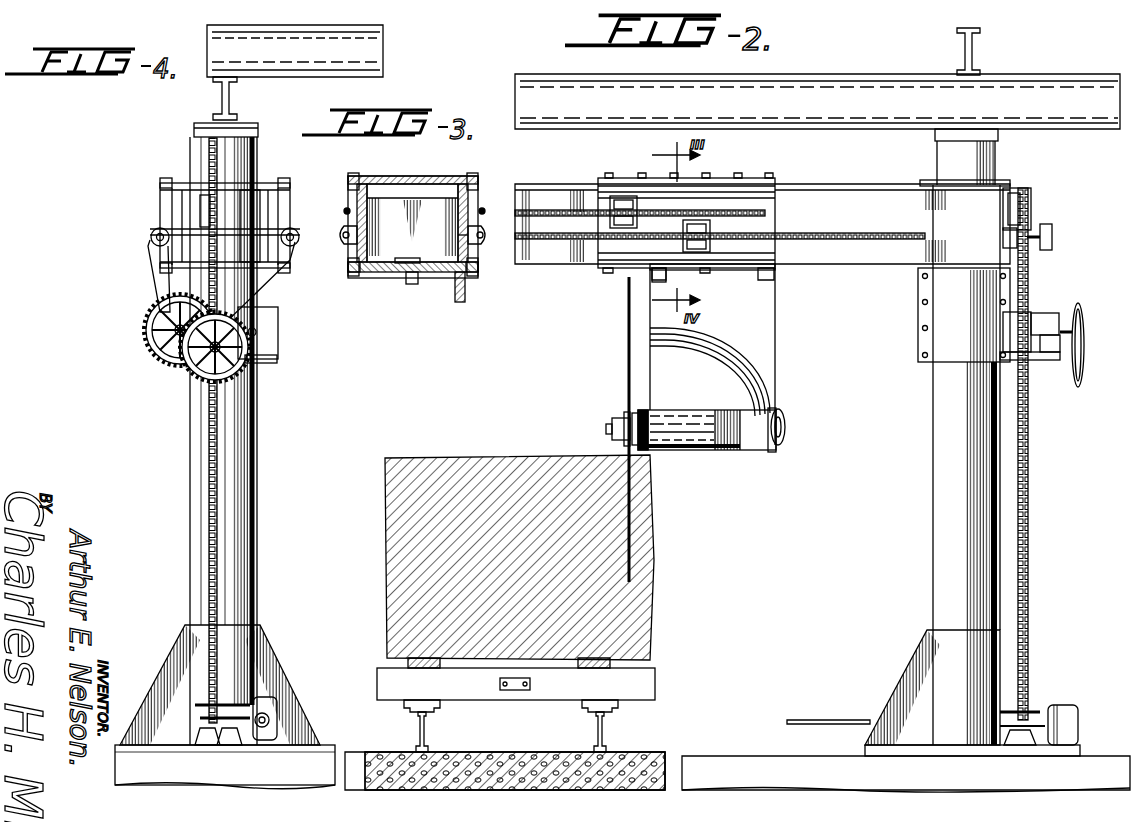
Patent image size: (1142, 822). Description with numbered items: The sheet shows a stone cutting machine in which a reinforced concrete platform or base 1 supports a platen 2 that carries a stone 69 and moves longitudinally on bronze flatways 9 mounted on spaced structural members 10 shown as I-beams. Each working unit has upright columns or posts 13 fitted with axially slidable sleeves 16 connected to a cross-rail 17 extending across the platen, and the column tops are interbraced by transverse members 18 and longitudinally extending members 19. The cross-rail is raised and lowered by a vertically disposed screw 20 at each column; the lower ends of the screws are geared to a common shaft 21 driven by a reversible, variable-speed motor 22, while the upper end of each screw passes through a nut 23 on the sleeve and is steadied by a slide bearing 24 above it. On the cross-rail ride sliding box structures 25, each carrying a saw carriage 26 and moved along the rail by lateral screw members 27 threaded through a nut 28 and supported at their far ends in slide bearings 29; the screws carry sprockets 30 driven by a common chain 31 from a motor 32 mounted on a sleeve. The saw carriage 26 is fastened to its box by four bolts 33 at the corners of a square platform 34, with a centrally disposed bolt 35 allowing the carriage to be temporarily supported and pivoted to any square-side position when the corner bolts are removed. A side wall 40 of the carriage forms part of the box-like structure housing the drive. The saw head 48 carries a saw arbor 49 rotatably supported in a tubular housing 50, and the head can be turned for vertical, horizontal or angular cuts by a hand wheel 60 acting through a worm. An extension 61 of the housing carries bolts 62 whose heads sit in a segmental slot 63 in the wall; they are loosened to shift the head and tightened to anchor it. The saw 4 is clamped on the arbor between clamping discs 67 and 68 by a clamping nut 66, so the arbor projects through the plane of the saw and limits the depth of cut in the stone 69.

In FIG. 4, the platform or base 1 is at (312, 766).
In FIG. 2, the platform or base 1 is at (702, 770).
In FIG. 2, the platen 2 is at (645, 687).
In FIG. 2, the saw 4 is at (626, 352).
In FIG. 2, the flatways 9 is at (410, 716).
In FIG. 2, the structural members 10 is at (416, 740).
In FIG. 4, the column 13 is at (250, 497).
In FIG. 2, the column 13 is at (944, 577).
In FIG. 2, the sleeve 16 is at (938, 335).
In FIG. 4, the cross-rail 17 is at (178, 208).
In FIG. 3, the cross-rail 17 is at (455, 186).
In FIG. 2, the cross-rail 17 is at (880, 248).
In FIG. 4, the transverse members 18 is at (230, 96).
In FIG. 2, the transverse members 18 is at (1100, 113).
In FIG. 4, the longitudinally extending members 19 is at (303, 56).
In FIG. 2, the longitudinally extending members 19 is at (975, 62).
In FIG. 4, the screw 20 is at (211, 433).
In FIG. 2, the screw 20 is at (1028, 500).
In FIG. 2, the common shaft 21 is at (858, 724).
In FIG. 4, the motor 22 is at (270, 703).
In FIG. 2, the motor 22 is at (1060, 716).
In FIG. 2, the nut 23 is at (1046, 316).
In FIG. 4, the slide bearing 24 is at (210, 200).
In FIG. 2, the slide bearing 24 is at (1031, 205).
In FIG. 4, the sliding box structure 25 is at (255, 192).
In FIG. 3, the sliding box structure 25 is at (405, 184).
In FIG. 2, the sliding box structure 25 is at (745, 202).
In FIG. 3, the saw carriage 26 is at (466, 292).
In FIG. 2, the saw carriage 26 is at (777, 331).
In FIG. 3, the screw members 27 is at (484, 236).
In FIG. 2, the screw members 27 is at (815, 234).
In FIG. 3, the nut 28 is at (481, 251).
In FIG. 2, the nut 28 is at (716, 282).
In FIG. 2, the slide bearings 29 is at (620, 208).
In FIG. 4, the sprockets 30 is at (151, 233).
In FIG. 3, the sprockets 30 is at (343, 210).
In FIG. 4, the chain 31 is at (160, 283).
In FIG. 2, the chain 31 is at (1052, 258).
In FIG. 4, the motor 32 is at (266, 322).
In FIG. 2, the motor 32 is at (1081, 324).
In FIG. 3, the bolts 33 is at (350, 272).
In FIG. 2, the bolts 33 is at (655, 282).
In FIG. 3, the square platform 34 is at (400, 272).
In FIG. 3, the centrally disposed bolt 35 is at (420, 282).
In FIG. 2, the side wall 40 is at (762, 350).
In FIG. 2, the saw head 48 is at (742, 450).
In FIG. 2, the saw arbor 49 is at (660, 449).
In FIG. 2, the tubular housing 50 is at (698, 447).
In FIG. 2, the hand wheel 60 is at (786, 426).
In FIG. 2, the extension of tubular housing 61 is at (758, 450).
In FIG. 2, the bolts 62 is at (773, 443).
In FIG. 2, the segmental slot 63 is at (748, 380).
In FIG. 2, the clamping nut 66 is at (612, 426).
In FIG. 2, the clamping disc 67 is at (625, 412).
In FIG. 2, the clamping disc 68 is at (635, 412).
In FIG. 2, the stone 69 is at (645, 557).